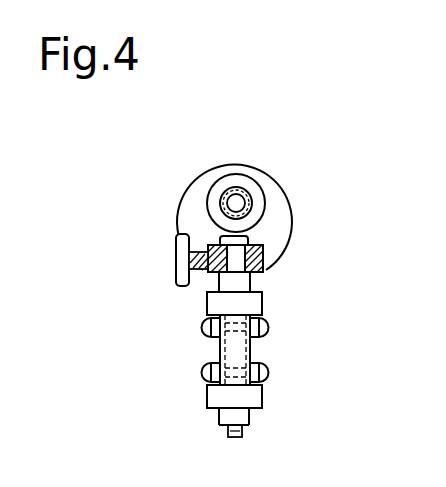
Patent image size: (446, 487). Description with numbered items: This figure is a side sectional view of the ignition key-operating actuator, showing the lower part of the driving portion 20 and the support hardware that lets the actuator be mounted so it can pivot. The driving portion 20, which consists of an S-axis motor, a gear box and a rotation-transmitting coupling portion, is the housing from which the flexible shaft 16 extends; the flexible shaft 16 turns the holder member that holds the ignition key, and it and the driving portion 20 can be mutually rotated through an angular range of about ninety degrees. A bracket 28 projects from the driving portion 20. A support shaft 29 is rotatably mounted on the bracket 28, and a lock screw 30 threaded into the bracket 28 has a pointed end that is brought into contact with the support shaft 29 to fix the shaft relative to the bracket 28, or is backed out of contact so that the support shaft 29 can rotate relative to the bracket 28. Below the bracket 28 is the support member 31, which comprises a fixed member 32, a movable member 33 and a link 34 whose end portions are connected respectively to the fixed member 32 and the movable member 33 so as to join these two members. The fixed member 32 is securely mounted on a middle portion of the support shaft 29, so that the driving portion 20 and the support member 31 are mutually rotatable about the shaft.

The driving portion 20 is at (182, 197).
The flexible shaft 16 is at (250, 199).
The bracket 28 is at (268, 248).
The support shaft 29 is at (243, 258).
The lock screw 30 is at (176, 258).
The support member 31 is at (184, 333).
The fixed member 32 is at (257, 302).
The link 34 is at (238, 350).
The movable member 33 is at (253, 395).